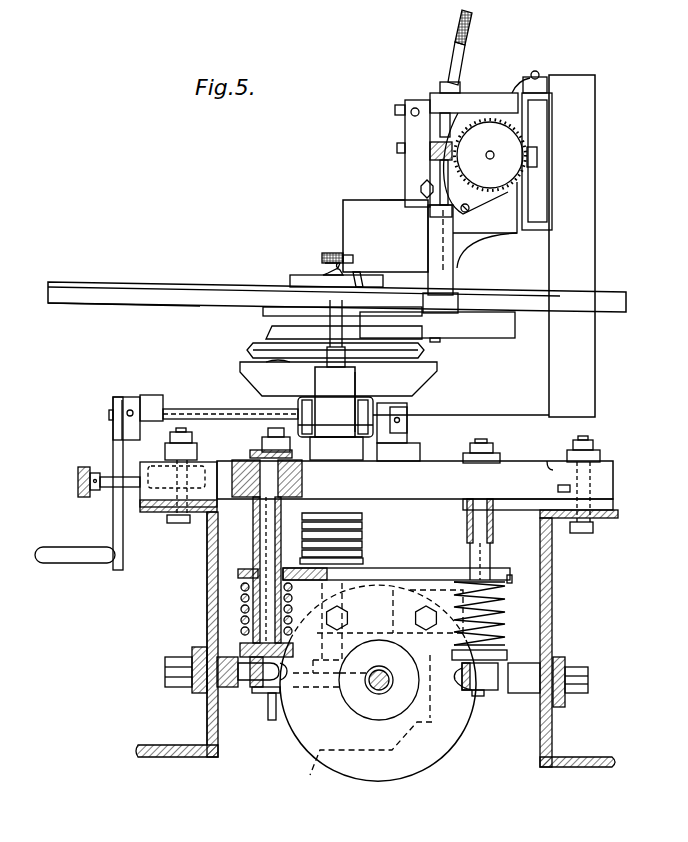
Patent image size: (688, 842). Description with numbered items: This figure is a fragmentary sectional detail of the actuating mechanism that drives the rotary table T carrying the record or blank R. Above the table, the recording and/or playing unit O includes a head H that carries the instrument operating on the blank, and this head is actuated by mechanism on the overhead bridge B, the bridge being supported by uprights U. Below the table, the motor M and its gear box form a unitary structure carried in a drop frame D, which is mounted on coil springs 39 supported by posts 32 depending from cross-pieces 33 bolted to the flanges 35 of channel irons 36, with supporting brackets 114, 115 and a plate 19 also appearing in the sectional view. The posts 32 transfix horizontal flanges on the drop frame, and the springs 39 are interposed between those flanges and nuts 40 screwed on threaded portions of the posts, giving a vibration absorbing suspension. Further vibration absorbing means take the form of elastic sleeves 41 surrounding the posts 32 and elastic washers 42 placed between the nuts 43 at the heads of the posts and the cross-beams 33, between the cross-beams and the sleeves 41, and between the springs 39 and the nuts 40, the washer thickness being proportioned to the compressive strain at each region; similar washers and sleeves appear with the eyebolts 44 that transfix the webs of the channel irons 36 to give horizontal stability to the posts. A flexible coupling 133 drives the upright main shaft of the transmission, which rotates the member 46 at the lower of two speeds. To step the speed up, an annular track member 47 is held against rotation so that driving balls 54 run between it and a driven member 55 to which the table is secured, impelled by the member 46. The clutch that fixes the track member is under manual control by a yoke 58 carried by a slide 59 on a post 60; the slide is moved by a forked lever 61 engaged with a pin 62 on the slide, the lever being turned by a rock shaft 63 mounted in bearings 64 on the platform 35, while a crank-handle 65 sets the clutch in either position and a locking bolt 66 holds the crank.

The bridge B is at (434, 80).
The recording and/or playing unit O is at (495, 88).
The uprights U is at (572, 246).
The head H is at (430, 247).
The drop frame D is at (490, 195).
The record or blank R is at (186, 284).
The rotary table T is at (110, 295).
The yoke 58 is at (417, 328).
The driven member 55 is at (266, 333).
The member 46 is at (250, 346).
The annular track member 47 is at (243, 370).
The driving balls 54 is at (279, 362).
The post 60 is at (335, 351).
The forked lever 61 is at (331, 400).
The slide 59 is at (356, 381).
The pin 62 is at (298, 420).
The bearings 64 is at (152, 395).
The rock shaft 63 is at (177, 410).
The crank-handle 65 is at (113, 516).
The locking bolt 66 is at (78, 480).
The flanges 35 is at (443, 460).
The sleeves 41 is at (493, 558).
The cross-pieces 33 is at (413, 493).
The washers 42 is at (166, 452).
The nuts 43 is at (262, 445).
The angle bracket 114 is at (170, 757).
The angle bracket 115 is at (570, 768).
The channel irons 36 is at (207, 604).
The posts 32 is at (256, 530).
The flexible coupling 133 is at (363, 540).
The motor plate 19 is at (489, 573).
The coil springs 39 is at (242, 602).
The eyebolts 44 is at (218, 680).
The nuts 40 is at (283, 680).
The motor M is at (370, 778).